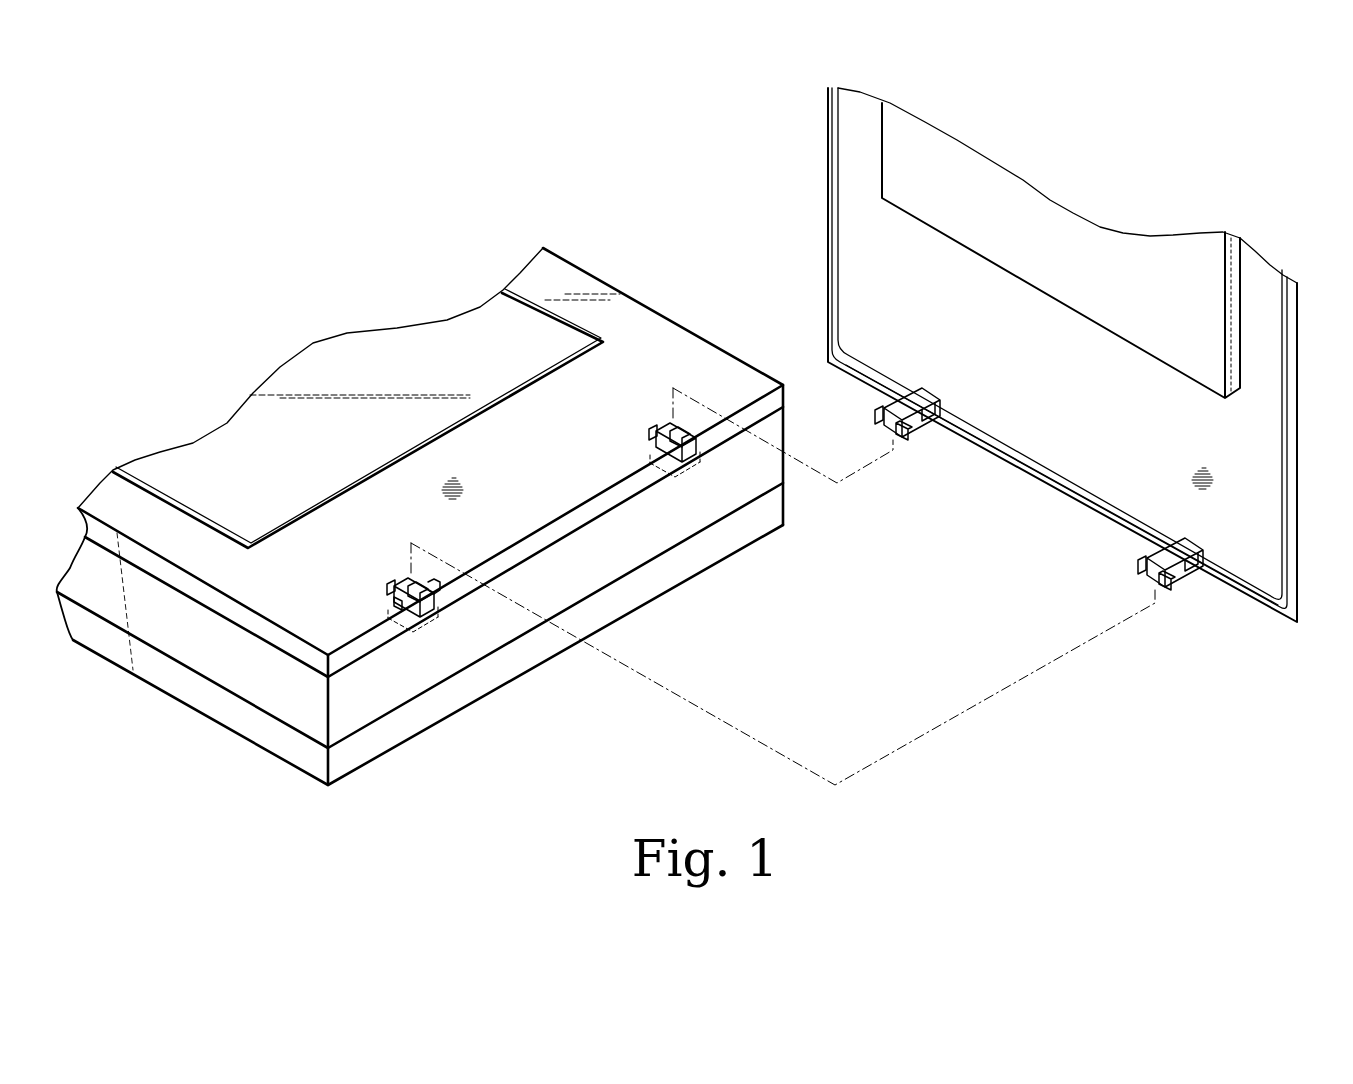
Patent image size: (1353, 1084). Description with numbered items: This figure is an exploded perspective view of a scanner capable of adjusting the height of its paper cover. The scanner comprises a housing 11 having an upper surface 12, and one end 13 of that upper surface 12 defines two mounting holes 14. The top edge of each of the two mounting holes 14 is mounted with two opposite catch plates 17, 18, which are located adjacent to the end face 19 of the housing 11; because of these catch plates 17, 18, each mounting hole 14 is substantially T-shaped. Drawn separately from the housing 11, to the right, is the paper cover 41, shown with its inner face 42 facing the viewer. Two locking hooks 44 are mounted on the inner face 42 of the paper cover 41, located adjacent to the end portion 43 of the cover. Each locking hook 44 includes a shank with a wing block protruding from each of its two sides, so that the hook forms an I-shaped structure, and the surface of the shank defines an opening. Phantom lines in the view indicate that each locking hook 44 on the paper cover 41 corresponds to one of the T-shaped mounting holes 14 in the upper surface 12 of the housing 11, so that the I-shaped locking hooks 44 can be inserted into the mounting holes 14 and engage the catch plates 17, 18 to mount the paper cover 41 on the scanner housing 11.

The housing 11 is at (441, 296).
The upper surface 12 is at (640, 320).
The end 13 is at (588, 490).
The mounting hole 14 is at (687, 423).
The catch plate 17 is at (400, 607).
The catch plate 18 is at (438, 588).
The end face 19 is at (588, 578).
The paper cover 41 is at (828, 200).
The inner face 42 is at (1047, 443).
The end portion 43 is at (1087, 510).
The locking hook 44 is at (908, 448).